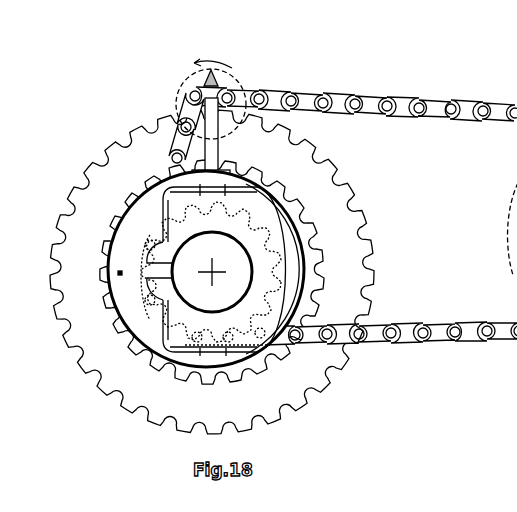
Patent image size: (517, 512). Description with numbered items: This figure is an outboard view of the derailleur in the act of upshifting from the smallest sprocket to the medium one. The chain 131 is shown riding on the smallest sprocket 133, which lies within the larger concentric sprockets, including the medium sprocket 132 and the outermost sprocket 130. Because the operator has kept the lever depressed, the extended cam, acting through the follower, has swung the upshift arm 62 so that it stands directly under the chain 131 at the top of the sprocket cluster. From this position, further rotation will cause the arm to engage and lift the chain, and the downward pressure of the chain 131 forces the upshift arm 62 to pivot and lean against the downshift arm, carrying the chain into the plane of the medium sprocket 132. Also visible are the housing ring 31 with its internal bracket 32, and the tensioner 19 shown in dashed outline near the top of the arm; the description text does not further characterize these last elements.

The chain tensioner 19 is at (177, 95).
The housing ring 31 is at (133, 233).
The bracket 32 is at (210, 190).
The upshift arm 62 is at (213, 138).
The large sprocket 130 is at (362, 207).
The chain 131 is at (281, 92).
The medium sprocket 132 is at (320, 245).
The smallest sprocket 133 is at (272, 272).